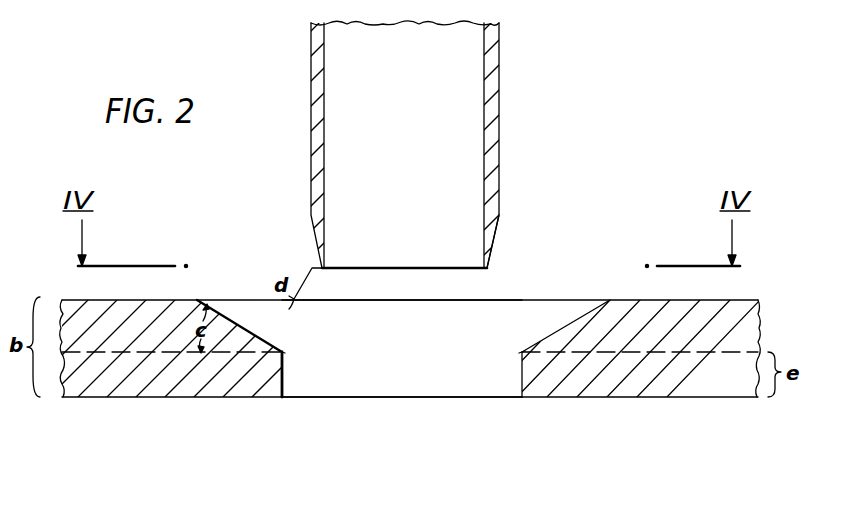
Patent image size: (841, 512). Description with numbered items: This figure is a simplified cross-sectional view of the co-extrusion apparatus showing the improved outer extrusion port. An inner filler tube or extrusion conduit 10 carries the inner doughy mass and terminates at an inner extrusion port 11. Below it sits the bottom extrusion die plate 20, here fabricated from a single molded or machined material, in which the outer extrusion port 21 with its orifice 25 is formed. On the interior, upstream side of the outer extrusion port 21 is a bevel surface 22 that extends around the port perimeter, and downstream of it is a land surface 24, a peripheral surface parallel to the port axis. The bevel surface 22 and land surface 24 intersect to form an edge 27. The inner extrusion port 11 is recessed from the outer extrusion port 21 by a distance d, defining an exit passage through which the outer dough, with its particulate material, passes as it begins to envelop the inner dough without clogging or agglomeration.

The inner extrusion conduit 10 is at (498, 96).
The inner extrusion port 11 is at (490, 248).
The extrusion die plate 20 is at (223, 397).
The outer extrusion port 21 is at (286, 420).
The bevel surface 22 is at (230, 320).
The land surface 24 is at (284, 377).
The orifice 25 is at (425, 386).
The edge 27 is at (285, 353).